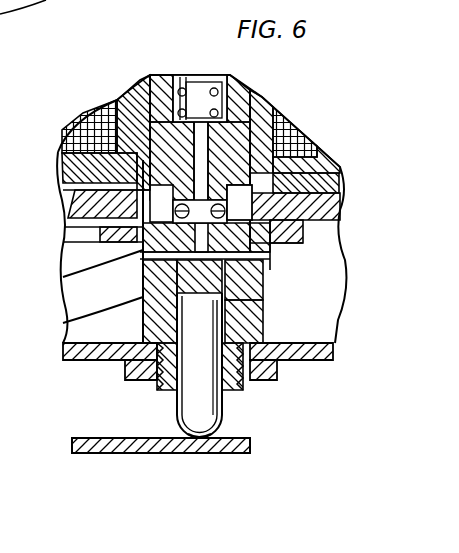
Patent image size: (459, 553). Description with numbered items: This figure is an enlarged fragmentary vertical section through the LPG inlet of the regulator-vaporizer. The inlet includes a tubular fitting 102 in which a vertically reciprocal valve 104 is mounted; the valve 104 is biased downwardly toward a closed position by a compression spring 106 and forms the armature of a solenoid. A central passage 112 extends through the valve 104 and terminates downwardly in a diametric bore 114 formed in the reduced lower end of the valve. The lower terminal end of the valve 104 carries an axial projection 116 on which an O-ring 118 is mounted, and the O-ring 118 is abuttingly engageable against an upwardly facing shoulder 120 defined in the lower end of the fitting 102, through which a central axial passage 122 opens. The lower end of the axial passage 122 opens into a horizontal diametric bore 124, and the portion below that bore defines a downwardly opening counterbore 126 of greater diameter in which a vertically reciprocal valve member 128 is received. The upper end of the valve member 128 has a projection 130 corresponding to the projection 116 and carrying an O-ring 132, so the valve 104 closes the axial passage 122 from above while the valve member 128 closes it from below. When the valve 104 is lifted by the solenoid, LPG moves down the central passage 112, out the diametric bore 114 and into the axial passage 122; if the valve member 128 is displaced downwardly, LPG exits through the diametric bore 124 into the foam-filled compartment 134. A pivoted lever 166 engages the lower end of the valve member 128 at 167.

The tubular fitting 102 is at (137, 93).
The valve 104 is at (233, 127).
The compression spring 106 is at (197, 92).
The central passage 112 is at (120, 103).
The diametric bore 114 is at (62, 130).
The axial projection 116 is at (262, 248).
The O-ring 118 is at (62, 183).
The upwardly facing shoulder 120 is at (70, 215).
The axial passage 122 is at (63, 266).
The horizontal diametric bore 124 is at (67, 297).
The counterbore 126 is at (68, 326).
The valve member 128 is at (220, 403).
The projection 130 is at (268, 308).
The O-ring 132 is at (263, 293).
The compartment 134 is at (318, 342).
The pivoted lever 166 is at (127, 458).
The engagement point of lever with valve member 167 is at (185, 437).